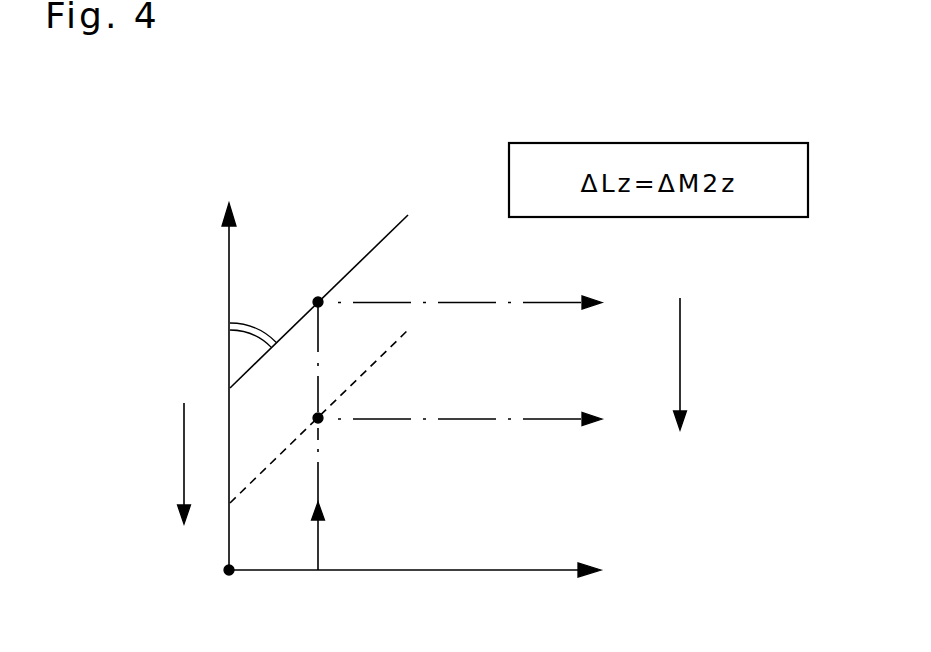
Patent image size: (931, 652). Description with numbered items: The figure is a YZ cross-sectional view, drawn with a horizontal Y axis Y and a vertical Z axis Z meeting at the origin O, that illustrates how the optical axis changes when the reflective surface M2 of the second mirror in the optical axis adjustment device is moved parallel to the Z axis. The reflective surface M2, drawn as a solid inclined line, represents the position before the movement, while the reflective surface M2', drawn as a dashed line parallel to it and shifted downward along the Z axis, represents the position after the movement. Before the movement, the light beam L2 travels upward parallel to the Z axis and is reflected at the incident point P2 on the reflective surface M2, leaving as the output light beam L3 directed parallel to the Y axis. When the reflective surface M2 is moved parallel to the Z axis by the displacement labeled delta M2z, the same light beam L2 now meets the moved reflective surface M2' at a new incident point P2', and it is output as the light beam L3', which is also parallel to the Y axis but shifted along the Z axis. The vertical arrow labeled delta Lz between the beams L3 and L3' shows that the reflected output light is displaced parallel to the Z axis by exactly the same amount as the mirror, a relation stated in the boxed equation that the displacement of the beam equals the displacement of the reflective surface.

The reflective surface M2 is at (319, 253).
The reflective surface after movement M2' is at (361, 416).
The incident point P2 is at (303, 273).
The incident point after movement P2' is at (364, 439).
The light beam L2 is at (340, 436).
The light beam L3 is at (487, 305).
The light beam after movement L3' is at (492, 424).
The Z axis Z is at (219, 370).
The Y axis Y is at (430, 578).
The origin O is at (221, 585).